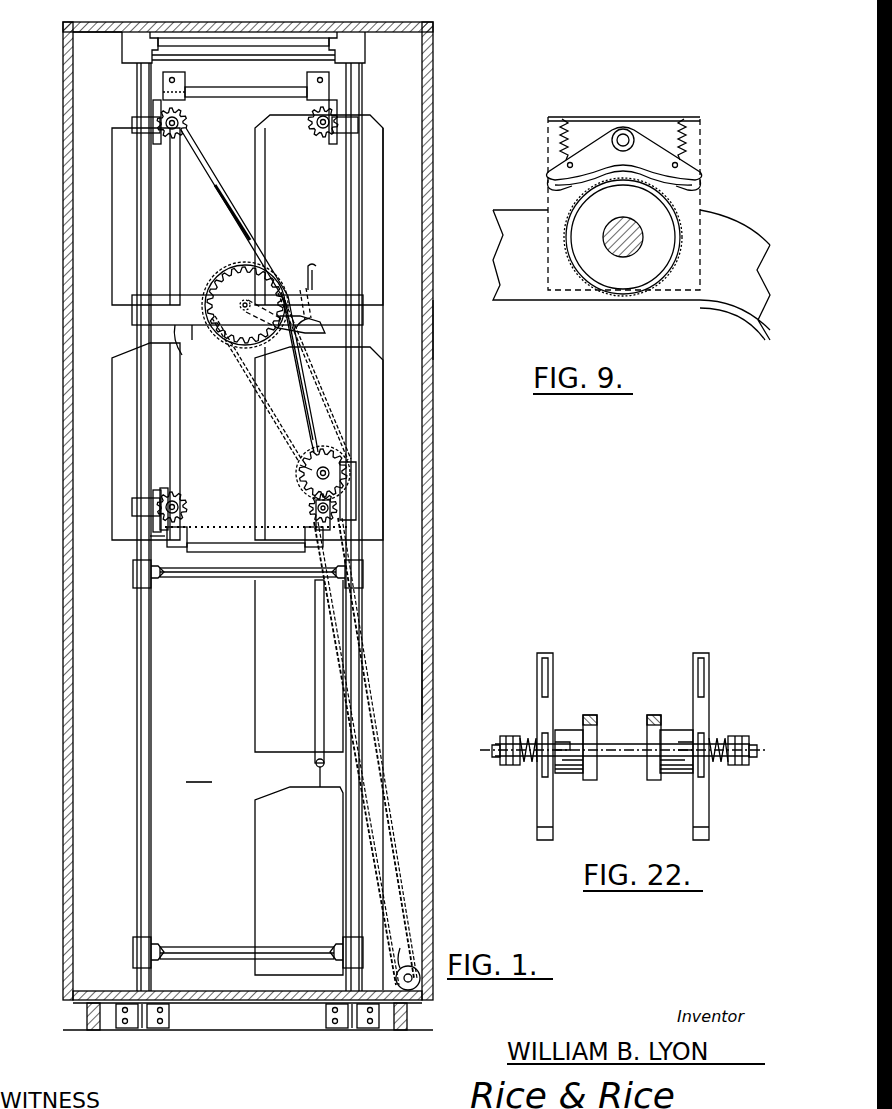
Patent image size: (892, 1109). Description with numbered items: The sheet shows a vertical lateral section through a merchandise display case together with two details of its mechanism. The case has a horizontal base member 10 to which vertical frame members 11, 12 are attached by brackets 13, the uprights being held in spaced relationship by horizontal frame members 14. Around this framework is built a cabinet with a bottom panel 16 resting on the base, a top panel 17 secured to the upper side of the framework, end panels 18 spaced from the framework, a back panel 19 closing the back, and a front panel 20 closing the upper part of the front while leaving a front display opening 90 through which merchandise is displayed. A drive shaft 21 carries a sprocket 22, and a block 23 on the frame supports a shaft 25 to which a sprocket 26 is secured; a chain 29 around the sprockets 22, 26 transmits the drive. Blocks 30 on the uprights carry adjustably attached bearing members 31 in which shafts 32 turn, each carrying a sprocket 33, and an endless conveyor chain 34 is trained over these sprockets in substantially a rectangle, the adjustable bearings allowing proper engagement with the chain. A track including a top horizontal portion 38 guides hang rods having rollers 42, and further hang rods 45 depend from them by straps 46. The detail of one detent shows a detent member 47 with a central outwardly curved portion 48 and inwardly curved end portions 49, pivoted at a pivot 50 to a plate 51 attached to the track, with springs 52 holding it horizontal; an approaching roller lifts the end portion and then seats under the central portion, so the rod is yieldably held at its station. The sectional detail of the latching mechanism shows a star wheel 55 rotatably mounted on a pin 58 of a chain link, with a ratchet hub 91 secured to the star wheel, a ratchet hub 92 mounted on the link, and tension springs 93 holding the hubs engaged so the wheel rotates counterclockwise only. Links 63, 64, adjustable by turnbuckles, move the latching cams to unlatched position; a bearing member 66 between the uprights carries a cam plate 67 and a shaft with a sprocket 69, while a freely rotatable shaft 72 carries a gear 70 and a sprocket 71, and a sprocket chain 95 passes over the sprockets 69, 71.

In FIG. 1, the horizontal base member 10 is at (90, 1018).
In FIG. 1, the vertical frame member 11 is at (355, 847).
In FIG. 1, the vertical frame member 12 is at (137, 835).
In FIG. 1, the bracket 13 is at (138, 1022).
In FIG. 1, the horizontal frame member 14 is at (222, 42).
In FIG. 1, the bottom panel 16 is at (233, 998).
In FIG. 1, the top panel 17 is at (106, 32).
In FIG. 1, the end panel 18 is at (199, 771).
In FIG. 1, the back panel 19 is at (63, 468).
In FIG. 1, the front panel 20 is at (433, 333).
In FIG. 1, the drive shaft 21 is at (413, 983).
In FIG. 1, the sprocket 22 is at (413, 960).
In FIG. 1, the block 23 is at (352, 502).
In FIG. 1, the shaft 25 is at (318, 506).
In FIG. 1, the sprocket 26 is at (312, 512).
In FIG. 1, the chain 29 is at (375, 732).
In FIG. 1, the block 30 is at (136, 124).
In FIG. 1, the bearing member 31 is at (165, 488).
In FIG. 1, the shaft 32 is at (174, 500).
In FIG. 1, the sprocket 33 is at (188, 130).
In FIG. 1, the endless conveyor chain 34 is at (248, 525).
In FIG. 22, the endless conveyor chain 34 is at (652, 715).
In FIG. 9, the top horizontal track portion 38 is at (523, 275).
In FIG. 9, the roller 42 is at (636, 272).
In FIG. 1, the hang rod 45 is at (315, 765).
In FIG. 1, the strap 46 is at (177, 205).
In FIG. 9, the detent member 47 is at (648, 148).
In FIG. 9, the central outwardly curved portion 48 is at (618, 165).
In FIG. 9, the inwardly curved portion 49 is at (560, 186).
In FIG. 9, the pivot 50 is at (623, 128).
In FIG. 1, the plate 51 is at (180, 80).
In FIG. 9, the plate 51 is at (557, 157).
In FIG. 9, the spring 52 is at (560, 140).
In FIG. 22, the star wheel 55 is at (550, 670).
In FIG. 22, the pin 58 is at (620, 755).
In FIG. 1, the link 63 is at (308, 388).
In FIG. 1, the link 64 is at (240, 206).
In FIG. 1, the bearing member 66 is at (196, 325).
In FIG. 1, the cam plate 67 is at (195, 290).
In FIG. 1, the sprocket 69 is at (236, 298).
In FIG. 1, the gear 70 is at (310, 450).
In FIG. 1, the sprocket 71 is at (300, 466).
In FIG. 1, the shaft 72 is at (333, 473).
In FIG. 1, the front display opening 90 is at (428, 680).
In FIG. 22, the ratchet hub 91 is at (560, 735).
In FIG. 22, the ratchet hub 92 is at (578, 769).
In FIG. 22, the tension spring 93 is at (527, 740).
In FIG. 1, the sprocket chain 95 is at (230, 345).